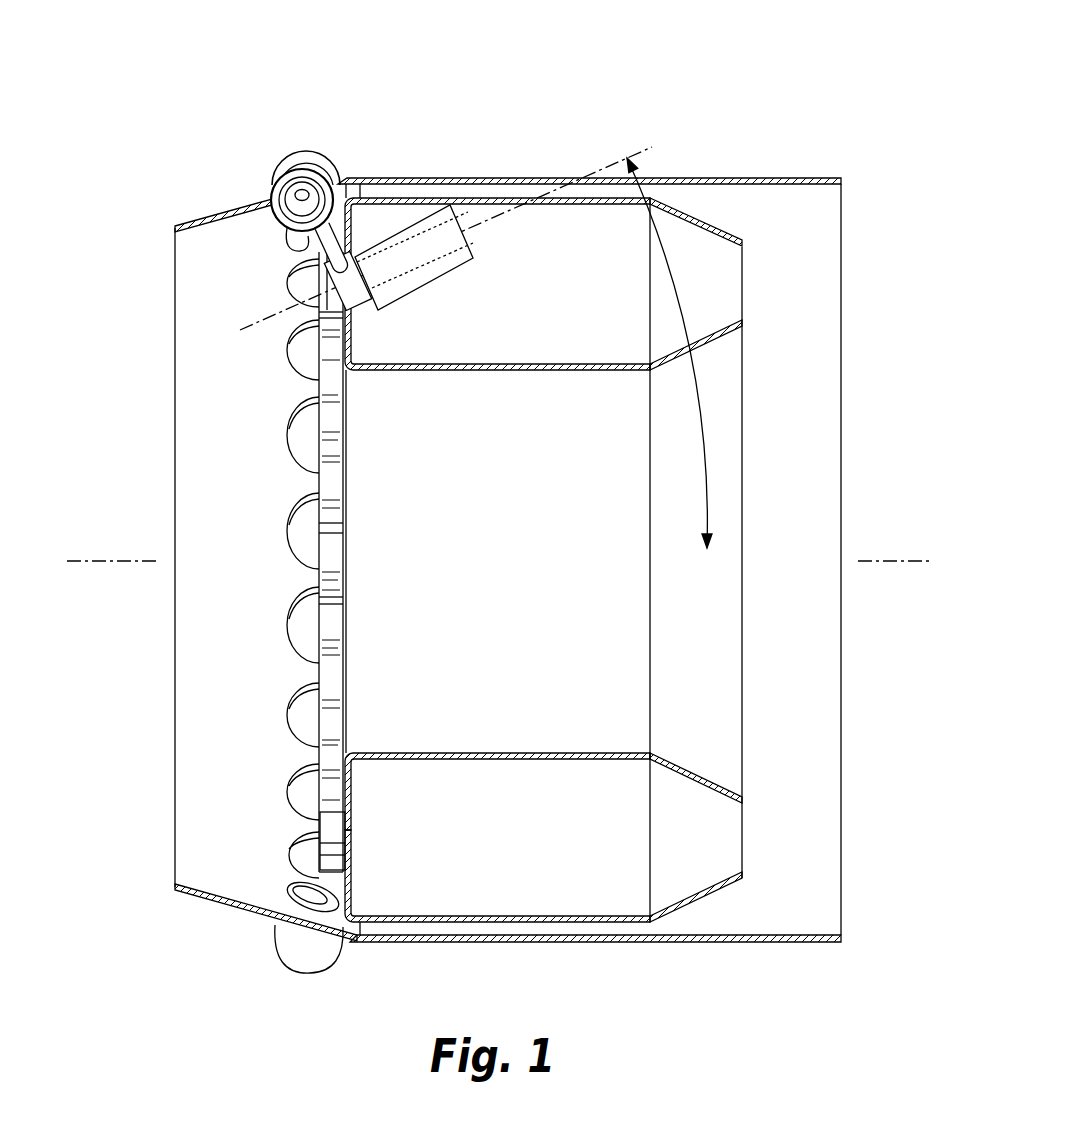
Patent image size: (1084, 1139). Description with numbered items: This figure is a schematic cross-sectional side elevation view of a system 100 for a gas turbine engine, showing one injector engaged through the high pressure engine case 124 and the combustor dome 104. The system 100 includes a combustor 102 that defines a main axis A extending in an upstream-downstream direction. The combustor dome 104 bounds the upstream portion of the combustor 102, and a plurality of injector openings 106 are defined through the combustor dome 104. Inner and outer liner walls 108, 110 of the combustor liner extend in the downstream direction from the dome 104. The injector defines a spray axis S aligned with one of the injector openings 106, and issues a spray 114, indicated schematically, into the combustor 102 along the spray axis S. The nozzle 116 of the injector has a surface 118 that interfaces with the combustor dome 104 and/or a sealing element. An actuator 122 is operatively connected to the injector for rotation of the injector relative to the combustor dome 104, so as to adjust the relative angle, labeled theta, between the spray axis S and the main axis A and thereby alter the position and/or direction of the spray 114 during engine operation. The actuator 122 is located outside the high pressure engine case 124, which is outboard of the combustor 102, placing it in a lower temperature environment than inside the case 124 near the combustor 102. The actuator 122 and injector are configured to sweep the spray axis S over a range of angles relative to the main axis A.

The system 100 is at (643, 86).
The combustor 102 is at (713, 510).
The combustor dome 104 is at (360, 228).
The injector openings 106 is at (300, 308).
The inner liner wall 108 is at (528, 752).
The outer liner wall 110 is at (540, 915).
The spray 114 is at (448, 258).
The nozzle 116 is at (360, 315).
The surface 118 is at (358, 293).
The actuator 122 is at (271, 200).
The high pressure engine case 124 is at (798, 942).